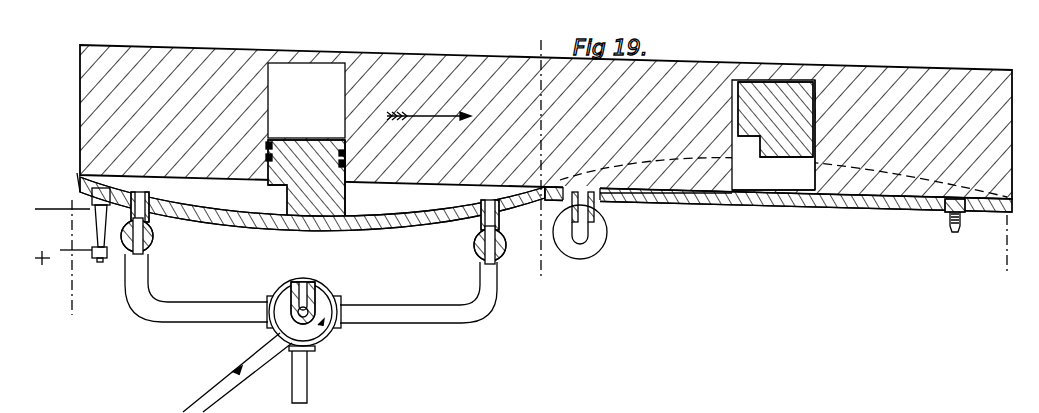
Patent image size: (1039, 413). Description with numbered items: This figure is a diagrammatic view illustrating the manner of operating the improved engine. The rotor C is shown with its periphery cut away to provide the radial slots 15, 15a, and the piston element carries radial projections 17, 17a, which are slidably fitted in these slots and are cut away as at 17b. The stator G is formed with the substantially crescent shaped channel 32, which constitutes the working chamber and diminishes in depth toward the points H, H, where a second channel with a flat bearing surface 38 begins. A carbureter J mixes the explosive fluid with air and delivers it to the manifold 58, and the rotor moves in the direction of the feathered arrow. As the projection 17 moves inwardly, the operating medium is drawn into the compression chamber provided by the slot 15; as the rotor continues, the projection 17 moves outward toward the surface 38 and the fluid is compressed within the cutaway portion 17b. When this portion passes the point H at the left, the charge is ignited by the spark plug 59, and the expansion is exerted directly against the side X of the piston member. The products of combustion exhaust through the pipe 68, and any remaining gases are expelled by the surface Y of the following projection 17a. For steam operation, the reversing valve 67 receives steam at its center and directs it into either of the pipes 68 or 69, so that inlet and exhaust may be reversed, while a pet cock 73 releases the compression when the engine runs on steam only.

The radial slot 15a is at (296, 78).
The radial projection 17a is at (350, 96).
The flat bearing surface 38 is at (327, 157).
The radial projection 17 is at (790, 100).
The cutaway portion 17b is at (247, 243).
The side of piston member X is at (757, 145).
The surface of following piston member Y is at (815, 135).
The rotor C is at (480, 80).
The crescent shaped channel 32 is at (230, 195).
The stator G is at (437, 218).
The intake manifold 58 is at (695, 194).
The radial slot 15 is at (788, 185).
The carbureter J is at (600, 250).
The pet cock 73 is at (950, 223).
The spark plug 59 is at (90, 192).
The points H is at (540, 188).
The pipe 69 is at (160, 307).
The pipe 68 is at (455, 318).
The reversing valve 67 is at (328, 338).